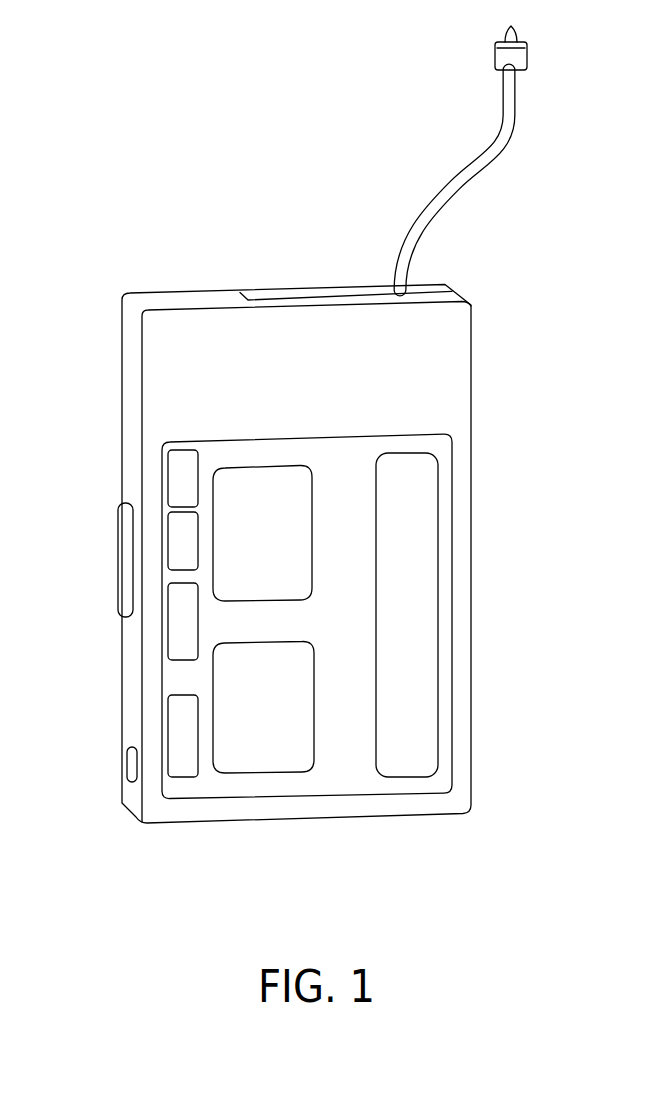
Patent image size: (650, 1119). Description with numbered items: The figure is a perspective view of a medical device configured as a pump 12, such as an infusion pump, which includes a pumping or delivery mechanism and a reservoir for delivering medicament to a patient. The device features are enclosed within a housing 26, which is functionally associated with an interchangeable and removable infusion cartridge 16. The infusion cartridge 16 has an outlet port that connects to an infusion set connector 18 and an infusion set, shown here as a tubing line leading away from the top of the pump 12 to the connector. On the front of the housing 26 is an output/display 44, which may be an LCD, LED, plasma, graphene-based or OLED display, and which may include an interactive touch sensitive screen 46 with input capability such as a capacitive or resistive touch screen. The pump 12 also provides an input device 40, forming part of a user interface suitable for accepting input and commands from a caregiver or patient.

The pump 12 is at (108, 187).
The infusion cartridge 16 is at (315, 300).
The infusion set connector 18 is at (518, 55).
The housing 26 is at (455, 353).
The input device 40 is at (125, 540).
The output/display 44 is at (443, 448).
The touch sensitive screen 46 is at (420, 658).